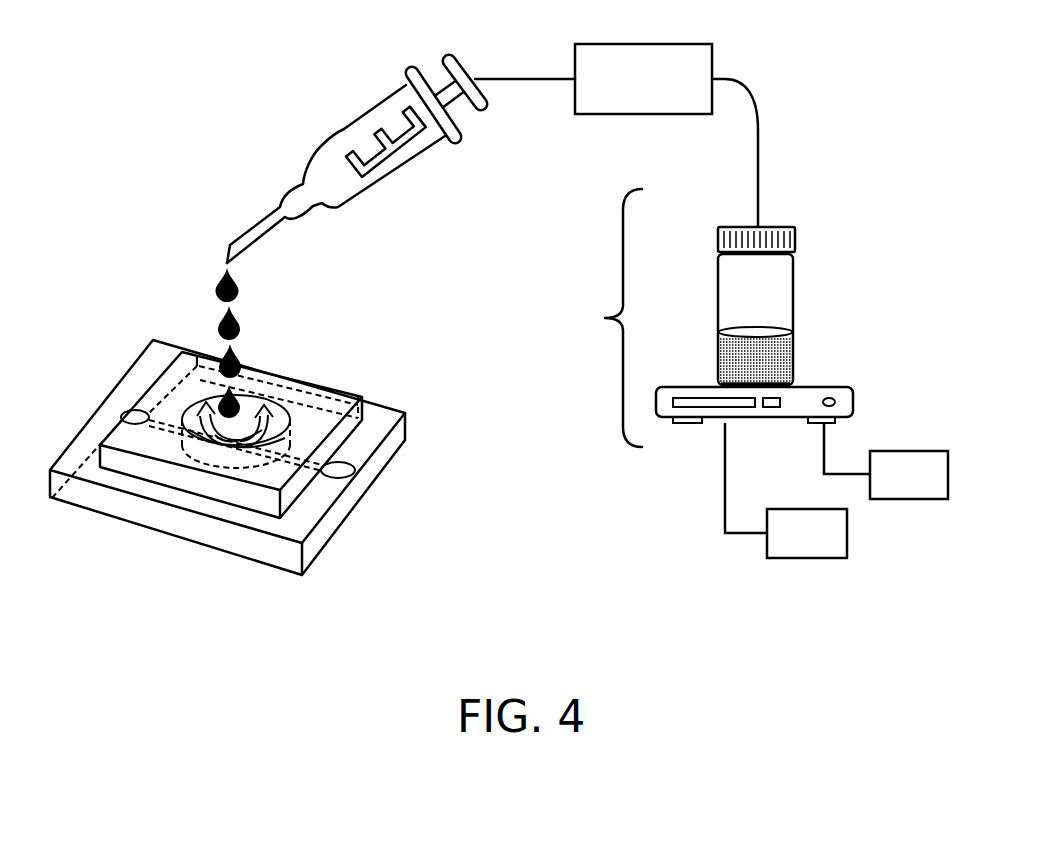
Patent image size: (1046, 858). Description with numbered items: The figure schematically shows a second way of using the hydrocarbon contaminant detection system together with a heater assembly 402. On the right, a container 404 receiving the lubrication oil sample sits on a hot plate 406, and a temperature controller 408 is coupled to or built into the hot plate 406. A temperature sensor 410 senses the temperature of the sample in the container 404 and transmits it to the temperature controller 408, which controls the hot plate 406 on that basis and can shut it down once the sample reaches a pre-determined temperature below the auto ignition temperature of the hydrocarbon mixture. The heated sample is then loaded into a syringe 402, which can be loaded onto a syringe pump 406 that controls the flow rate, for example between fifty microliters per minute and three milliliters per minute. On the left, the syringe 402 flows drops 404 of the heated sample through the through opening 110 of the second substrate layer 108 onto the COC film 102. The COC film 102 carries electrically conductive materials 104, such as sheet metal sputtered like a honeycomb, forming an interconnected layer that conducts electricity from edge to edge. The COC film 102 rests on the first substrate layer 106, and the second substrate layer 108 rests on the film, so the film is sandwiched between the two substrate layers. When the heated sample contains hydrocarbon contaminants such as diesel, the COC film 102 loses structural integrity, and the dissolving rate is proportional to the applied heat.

The cyclic olefin copolymer (COC) film 102 is at (247, 423).
The electrically conductive materials 104 is at (207, 430).
The first substrate layer 106 is at (320, 540).
The second substrate layer 108 is at (340, 395).
The through opening 110 is at (205, 395).
The heater assembly / syringe 402 is at (357, 118).
The container / drops 404 is at (222, 279).
The hot plate / syringe pump 406 is at (668, 93).
The temperature controller 408 is at (932, 489).
The temperature sensor 410 is at (829, 548).